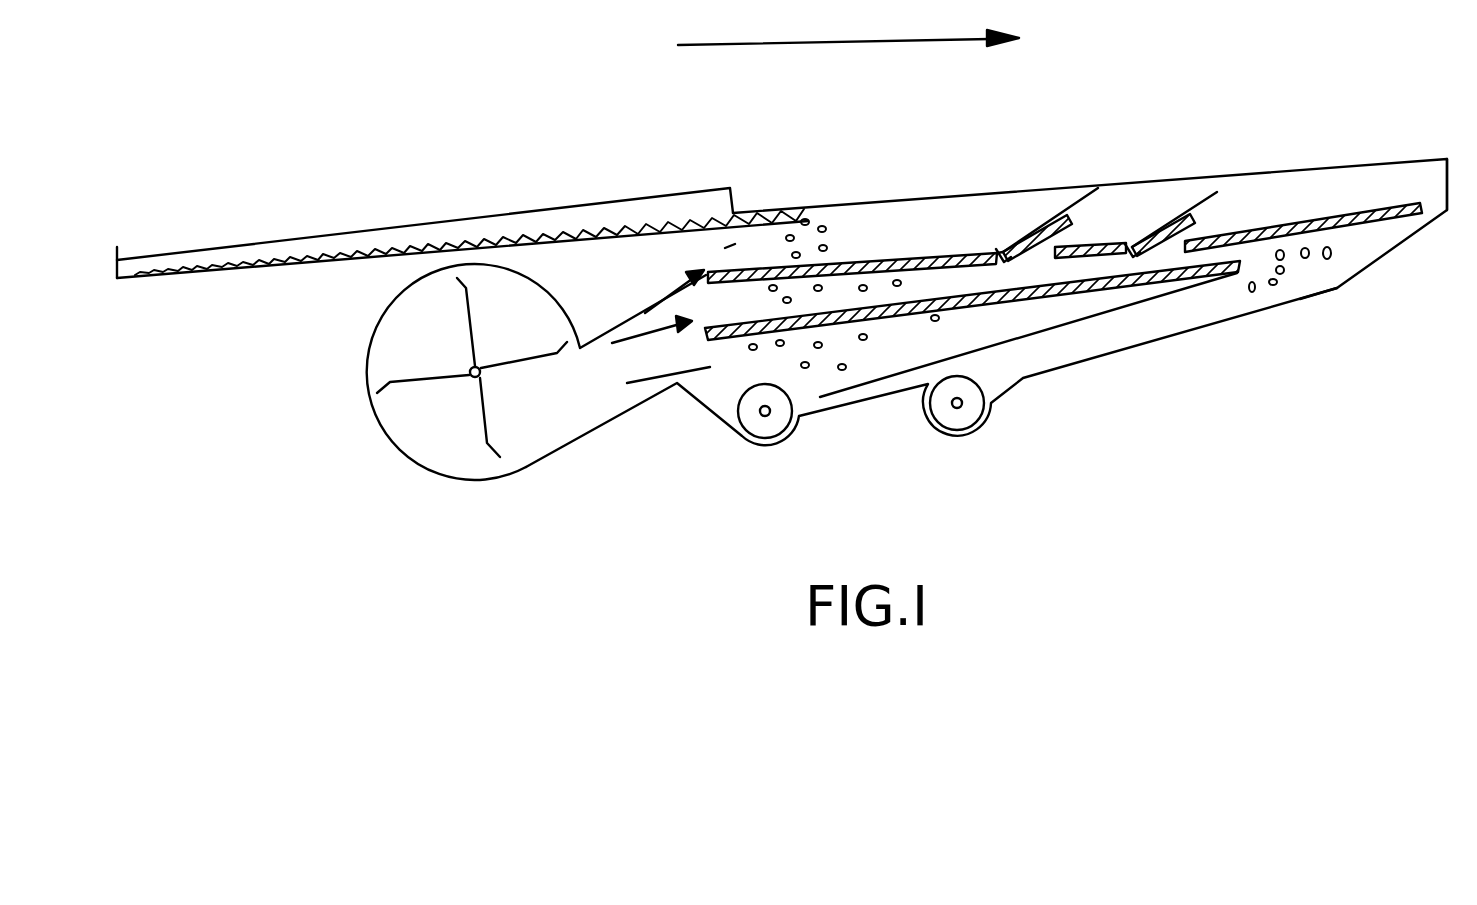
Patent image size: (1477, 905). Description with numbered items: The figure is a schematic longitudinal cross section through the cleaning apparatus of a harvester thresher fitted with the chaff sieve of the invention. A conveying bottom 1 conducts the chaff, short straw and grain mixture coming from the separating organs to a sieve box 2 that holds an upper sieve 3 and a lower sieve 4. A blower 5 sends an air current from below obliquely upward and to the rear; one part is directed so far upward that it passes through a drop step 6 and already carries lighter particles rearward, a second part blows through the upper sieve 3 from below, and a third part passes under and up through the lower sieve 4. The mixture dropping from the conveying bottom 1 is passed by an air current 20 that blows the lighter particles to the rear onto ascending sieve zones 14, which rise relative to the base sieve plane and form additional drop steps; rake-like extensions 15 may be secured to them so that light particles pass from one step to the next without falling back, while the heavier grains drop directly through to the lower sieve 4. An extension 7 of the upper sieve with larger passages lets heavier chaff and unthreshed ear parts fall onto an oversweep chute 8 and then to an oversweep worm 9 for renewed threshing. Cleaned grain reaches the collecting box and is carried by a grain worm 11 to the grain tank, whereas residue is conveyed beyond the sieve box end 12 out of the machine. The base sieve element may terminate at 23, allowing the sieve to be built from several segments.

The conveying bottom 1 is at (508, 237).
The sieve box 2 is at (958, 205).
The upper sieve 3 is at (877, 257).
The lower sieve 4 is at (920, 303).
The blower 5 is at (390, 338).
The drop step 6 is at (816, 235).
The extension of the upper sieve 7 is at (1337, 217).
The oversweep chute 8 is at (1297, 291).
The oversweep worm 9 is at (968, 410).
The grain worm 11 is at (757, 423).
The sieve box end 12 is at (1450, 192).
The sieve zone 14 is at (1023, 236).
The rake-like extension 15 is at (1075, 200).
The air current 20 is at (725, 248).
The termination of the base element 23 is at (1003, 253).